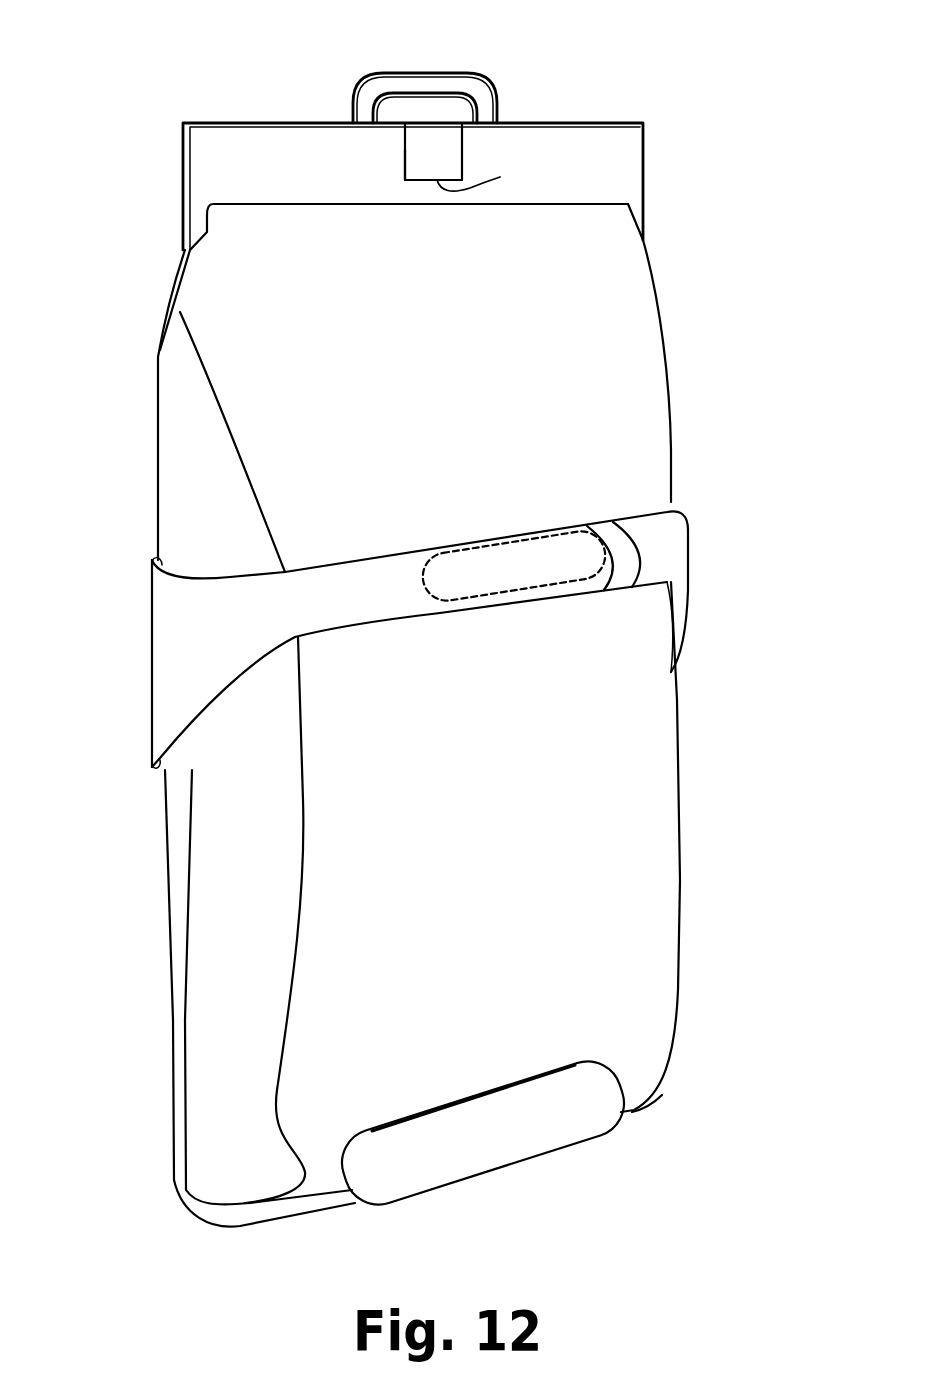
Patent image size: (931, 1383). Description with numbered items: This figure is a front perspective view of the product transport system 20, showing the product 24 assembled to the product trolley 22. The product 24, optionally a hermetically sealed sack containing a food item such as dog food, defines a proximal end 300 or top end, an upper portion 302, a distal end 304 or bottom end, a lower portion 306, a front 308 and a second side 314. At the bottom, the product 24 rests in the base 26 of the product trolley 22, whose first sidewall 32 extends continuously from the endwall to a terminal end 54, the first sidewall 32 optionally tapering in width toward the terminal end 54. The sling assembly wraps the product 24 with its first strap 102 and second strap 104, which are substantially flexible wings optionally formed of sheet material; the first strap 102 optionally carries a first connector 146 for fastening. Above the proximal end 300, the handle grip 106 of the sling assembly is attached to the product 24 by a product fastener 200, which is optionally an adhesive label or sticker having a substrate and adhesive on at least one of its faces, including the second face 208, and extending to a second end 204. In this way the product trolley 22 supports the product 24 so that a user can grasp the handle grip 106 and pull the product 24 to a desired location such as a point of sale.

The product transport system 20 is at (118, 88).
The product trolley 22 is at (351, 1232).
The product 24 is at (700, 403).
The base 26 is at (455, 1203).
The first sidewall 32 is at (532, 1127).
The terminal end 54 is at (470, 1090).
The first strap 102 is at (690, 567).
The second strap 104 is at (184, 639).
The handle grip 106 is at (408, 72).
The first connector 146 is at (622, 540).
The product fastener 200 is at (437, 147).
The second end 204 is at (495, 180).
The second face 208 is at (402, 168).
The proximal end 300 is at (590, 123).
The upper portion 302 is at (700, 262).
The distal end 304 is at (632, 1112).
The lower portion 306 is at (722, 900).
The front 308 is at (500, 794).
The second side 314 is at (223, 847).